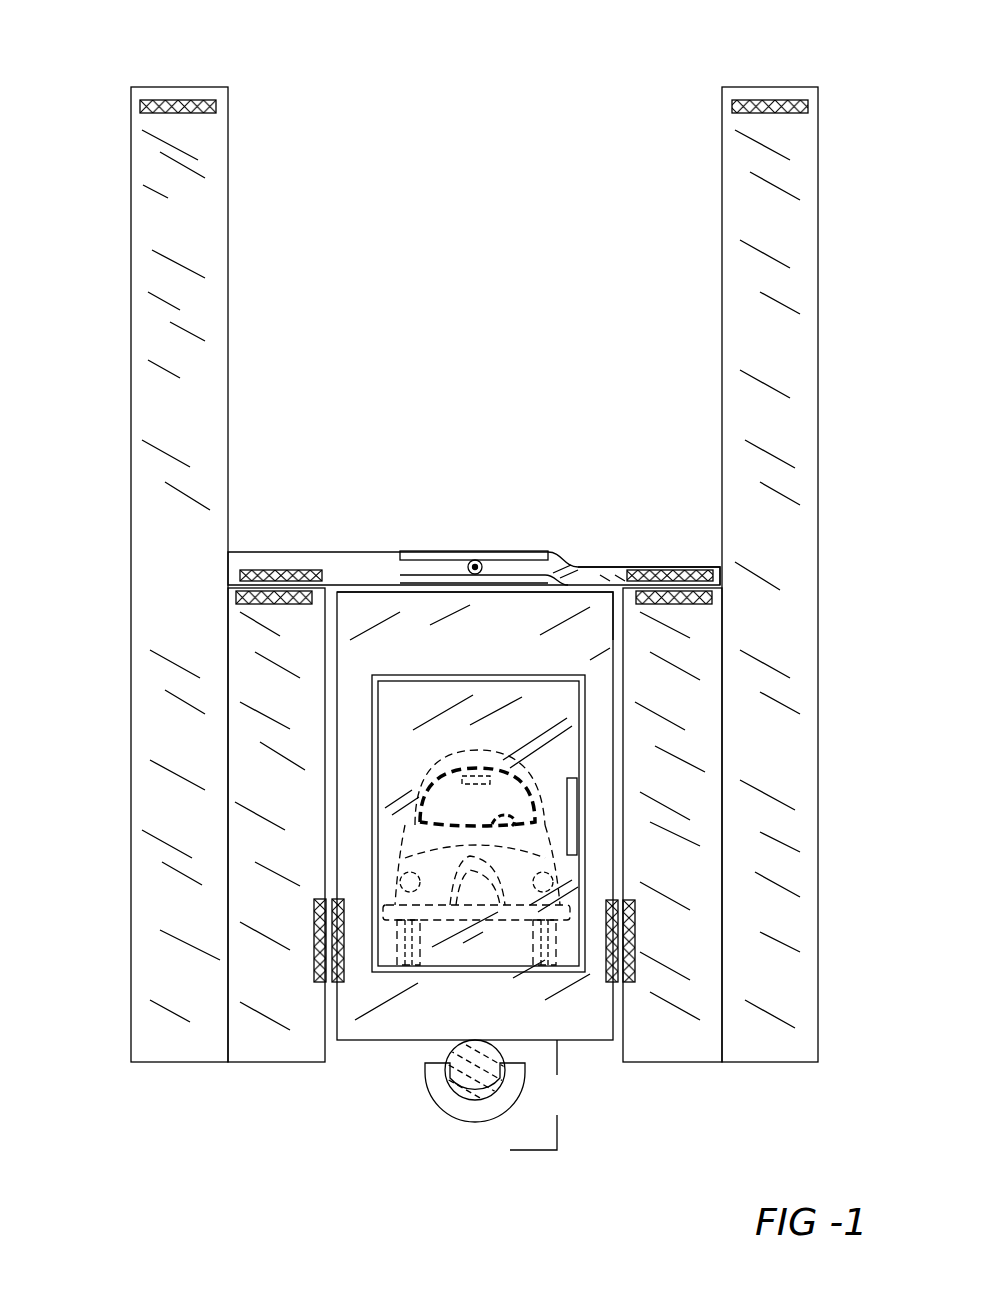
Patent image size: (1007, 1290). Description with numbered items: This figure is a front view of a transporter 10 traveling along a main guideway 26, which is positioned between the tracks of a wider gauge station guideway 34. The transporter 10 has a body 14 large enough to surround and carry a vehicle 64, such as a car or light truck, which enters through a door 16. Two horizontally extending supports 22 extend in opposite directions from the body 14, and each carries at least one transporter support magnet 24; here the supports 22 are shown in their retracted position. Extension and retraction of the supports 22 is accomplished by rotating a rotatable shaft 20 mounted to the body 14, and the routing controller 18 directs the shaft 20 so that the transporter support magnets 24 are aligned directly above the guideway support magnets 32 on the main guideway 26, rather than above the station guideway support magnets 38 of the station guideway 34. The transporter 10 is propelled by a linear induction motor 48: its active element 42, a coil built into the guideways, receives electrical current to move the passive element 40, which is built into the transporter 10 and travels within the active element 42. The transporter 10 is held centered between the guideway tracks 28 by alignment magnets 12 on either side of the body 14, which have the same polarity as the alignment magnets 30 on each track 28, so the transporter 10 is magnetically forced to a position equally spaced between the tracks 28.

The transporter 10 is at (475, 816).
The alignment magnets 12 is at (335, 978).
The body 14 is at (600, 610).
The door 16 is at (445, 675).
The routing controller 18 is at (573, 808).
The rotatable shaft 20 is at (462, 557).
The horizontally extending supports 22 is at (560, 577).
The transporter support magnet 24 is at (718, 565).
The main guideway 26 is at (672, 825).
The tracks 28 is at (276, 825).
The alignment magnets 30 is at (316, 940).
The guideway support magnets 32 is at (235, 586).
The station guideway 34 is at (474, 574).
The station guideway support magnets 38 is at (167, 97).
The passive element 40 is at (475, 1093).
The active element 42 is at (445, 1105).
The linear induction motor 48 is at (542, 1095).
The vehicle 64 is at (476, 857).